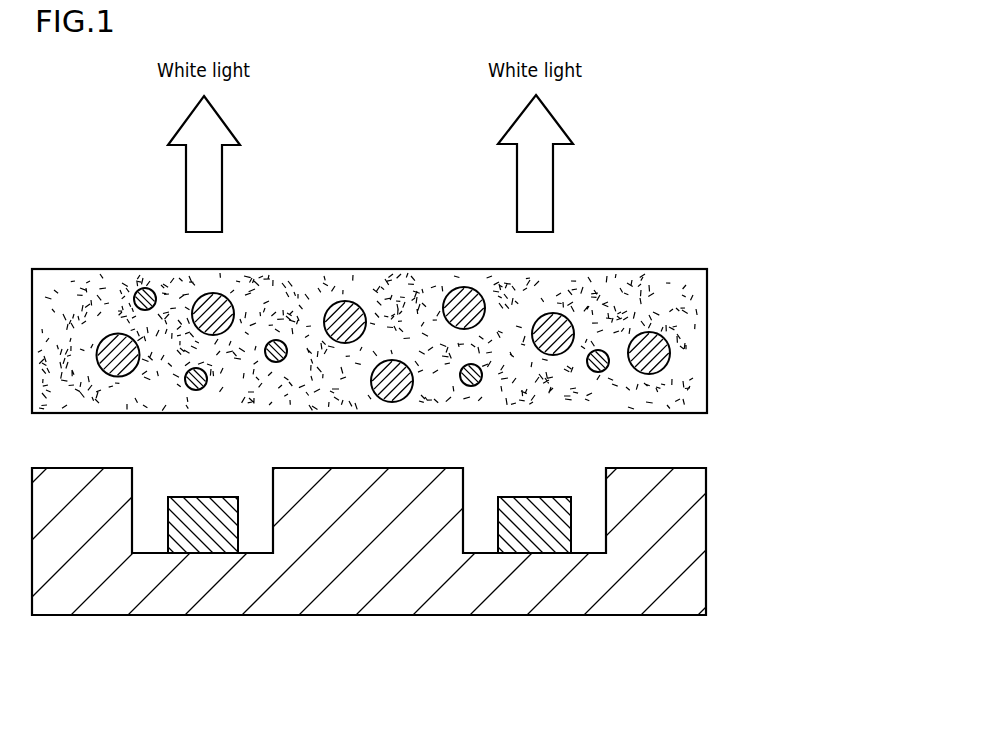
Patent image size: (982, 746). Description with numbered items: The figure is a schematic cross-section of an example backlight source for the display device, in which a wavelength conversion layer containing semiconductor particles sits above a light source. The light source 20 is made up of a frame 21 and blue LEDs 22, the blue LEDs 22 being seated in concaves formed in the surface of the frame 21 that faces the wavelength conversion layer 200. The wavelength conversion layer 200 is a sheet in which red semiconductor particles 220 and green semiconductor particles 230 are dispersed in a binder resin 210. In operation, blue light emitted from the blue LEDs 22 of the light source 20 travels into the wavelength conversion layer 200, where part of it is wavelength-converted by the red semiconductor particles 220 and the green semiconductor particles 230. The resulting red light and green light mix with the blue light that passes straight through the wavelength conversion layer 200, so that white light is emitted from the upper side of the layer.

The wavelength conversion layer 200 is at (727, 273).
The binder resin 210 is at (683, 297).
The red semiconductor particles 220 is at (670, 352).
The green semiconductor particles 230 is at (606, 367).
The light source 20 is at (727, 545).
The frame 21 is at (400, 595).
The blue LEDs 22 is at (210, 525).